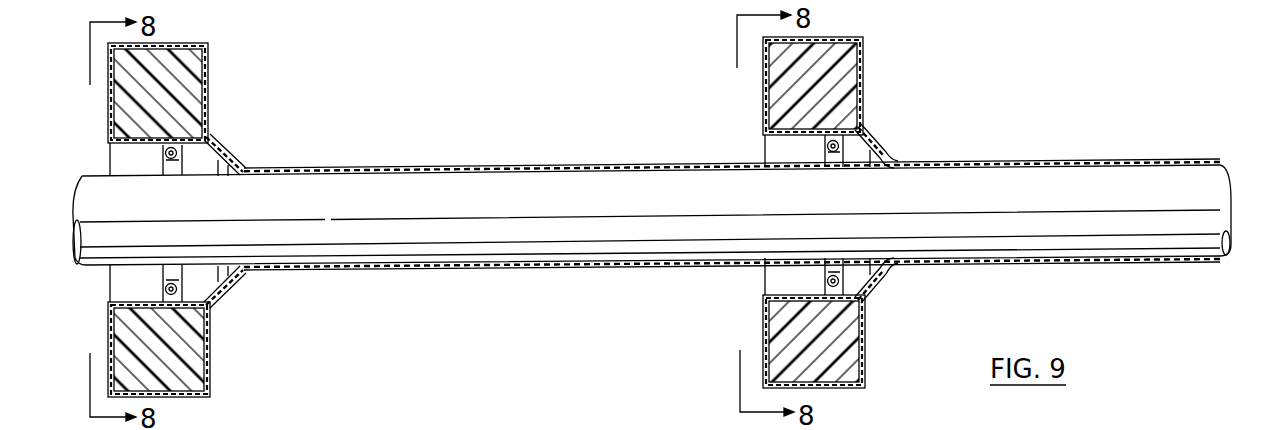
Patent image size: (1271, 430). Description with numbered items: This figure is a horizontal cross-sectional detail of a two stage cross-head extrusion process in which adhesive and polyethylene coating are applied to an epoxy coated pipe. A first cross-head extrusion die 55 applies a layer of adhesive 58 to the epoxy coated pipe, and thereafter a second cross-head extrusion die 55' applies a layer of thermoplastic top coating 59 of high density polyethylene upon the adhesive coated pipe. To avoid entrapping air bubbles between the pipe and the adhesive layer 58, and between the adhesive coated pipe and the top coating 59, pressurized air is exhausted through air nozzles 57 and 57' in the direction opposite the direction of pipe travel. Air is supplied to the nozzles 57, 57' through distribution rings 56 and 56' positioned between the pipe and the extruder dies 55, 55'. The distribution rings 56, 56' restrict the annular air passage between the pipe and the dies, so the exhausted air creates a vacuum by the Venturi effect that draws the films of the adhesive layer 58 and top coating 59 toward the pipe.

The first cross-head extrusion die 55 is at (189, 220).
The second cross-head extrusion die 55' is at (843, 212).
The distribution ring 56 is at (197, 223).
The distribution ring 56' is at (860, 215).
The air nozzle 57 is at (145, 222).
The air nozzle 57' is at (802, 218).
The layer of adhesive 58 is at (234, 167).
The thermoplastic top coating 59 is at (916, 300).